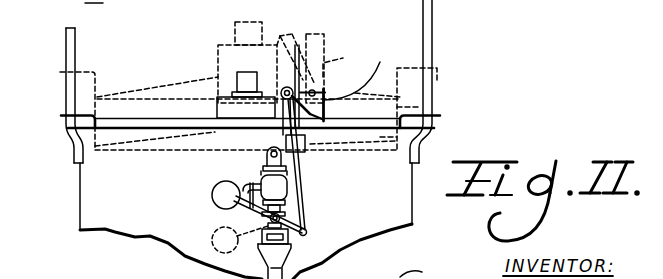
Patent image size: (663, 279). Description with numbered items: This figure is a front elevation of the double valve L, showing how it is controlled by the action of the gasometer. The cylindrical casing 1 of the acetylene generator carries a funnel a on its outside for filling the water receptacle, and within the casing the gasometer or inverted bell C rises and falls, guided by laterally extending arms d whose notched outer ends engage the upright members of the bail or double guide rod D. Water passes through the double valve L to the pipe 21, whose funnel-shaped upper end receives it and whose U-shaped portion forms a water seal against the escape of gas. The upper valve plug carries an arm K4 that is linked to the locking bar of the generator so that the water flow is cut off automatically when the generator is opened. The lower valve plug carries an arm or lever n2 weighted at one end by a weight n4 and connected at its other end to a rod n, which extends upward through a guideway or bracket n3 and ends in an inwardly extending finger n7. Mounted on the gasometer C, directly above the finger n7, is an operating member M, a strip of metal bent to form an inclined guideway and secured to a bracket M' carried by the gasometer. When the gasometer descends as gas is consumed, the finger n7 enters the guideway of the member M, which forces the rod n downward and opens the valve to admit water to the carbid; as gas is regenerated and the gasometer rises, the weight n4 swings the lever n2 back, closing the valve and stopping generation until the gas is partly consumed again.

The cylindrical casing 1 is at (92, 183).
The laterally extending arms d is at (99, 7).
The bail or double guide rod D is at (68, 55).
The funnel a is at (60, 73).
The gasometer or inverted bell C is at (155, 96).
The operating member M is at (250, 70).
The bracket M' is at (328, 68).
The inwardly extending finger n7 is at (303, 92).
The rod n is at (287, 146).
The guideway or bracket n3 is at (283, 144).
The double valve L is at (276, 187).
The arm or lever n2 is at (292, 224).
The arm K4 is at (163, 181).
The weight n4 is at (215, 226).
The water supply pipe 21 is at (262, 254).